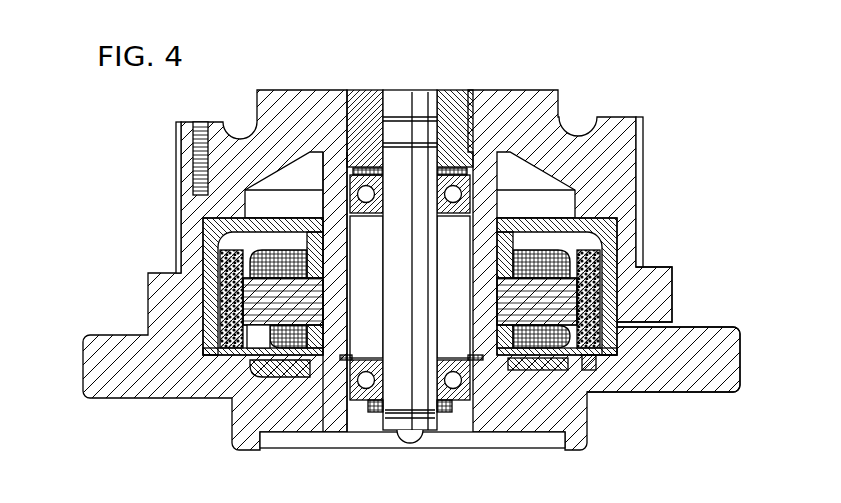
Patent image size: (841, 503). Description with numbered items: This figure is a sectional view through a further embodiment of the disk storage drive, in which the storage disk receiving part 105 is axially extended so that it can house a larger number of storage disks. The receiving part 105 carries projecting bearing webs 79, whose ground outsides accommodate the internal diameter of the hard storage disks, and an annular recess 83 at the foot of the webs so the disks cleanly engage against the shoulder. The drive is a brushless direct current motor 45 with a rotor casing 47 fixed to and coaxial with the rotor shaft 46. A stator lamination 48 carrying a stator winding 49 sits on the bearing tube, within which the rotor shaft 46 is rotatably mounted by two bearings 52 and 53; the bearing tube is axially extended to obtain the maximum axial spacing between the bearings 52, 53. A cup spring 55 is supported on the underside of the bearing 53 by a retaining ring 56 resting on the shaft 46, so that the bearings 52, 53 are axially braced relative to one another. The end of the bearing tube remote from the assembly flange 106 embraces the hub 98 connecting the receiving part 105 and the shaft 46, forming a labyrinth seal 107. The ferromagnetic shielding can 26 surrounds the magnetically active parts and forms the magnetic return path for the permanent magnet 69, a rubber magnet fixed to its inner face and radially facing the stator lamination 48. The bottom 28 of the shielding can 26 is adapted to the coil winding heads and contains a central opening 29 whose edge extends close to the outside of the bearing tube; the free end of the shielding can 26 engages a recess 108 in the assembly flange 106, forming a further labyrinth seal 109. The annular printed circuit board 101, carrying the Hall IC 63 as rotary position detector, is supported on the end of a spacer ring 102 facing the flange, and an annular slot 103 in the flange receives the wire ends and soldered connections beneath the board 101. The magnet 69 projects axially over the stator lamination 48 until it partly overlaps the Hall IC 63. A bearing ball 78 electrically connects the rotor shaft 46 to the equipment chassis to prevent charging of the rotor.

The storage disk receiving part 105 is at (306, 110).
The rotor shaft 46 is at (419, 102).
The hub 98 is at (453, 98).
The labyrinth seal 107 is at (498, 104).
The bearing web 79 is at (639, 130).
The brushless direct current motor 45 is at (659, 161).
The rotor casing 47 is at (172, 221).
The central opening 29 is at (313, 232).
The stator winding 49 is at (247, 267).
The stator lamination 48 is at (250, 307).
The bearing 52 is at (368, 217).
The spacer ring 102 is at (338, 313).
The bearing 53 is at (352, 356).
The bottom 28 is at (547, 227).
The permanent magnet 69 is at (610, 260).
The annular recess 83 is at (640, 281).
The shielding can 26 is at (608, 313).
The Hall IC 63 is at (258, 343).
The annular slot 103 is at (292, 383).
The cup spring 55 is at (372, 411).
The bearing ball 78 is at (417, 441).
The retaining ring 56 is at (447, 411).
The printed circuit board 101 is at (553, 371).
The recess 108 is at (610, 342).
The labyrinth seal 109 is at (618, 349).
The assembly flange 106 is at (713, 380).